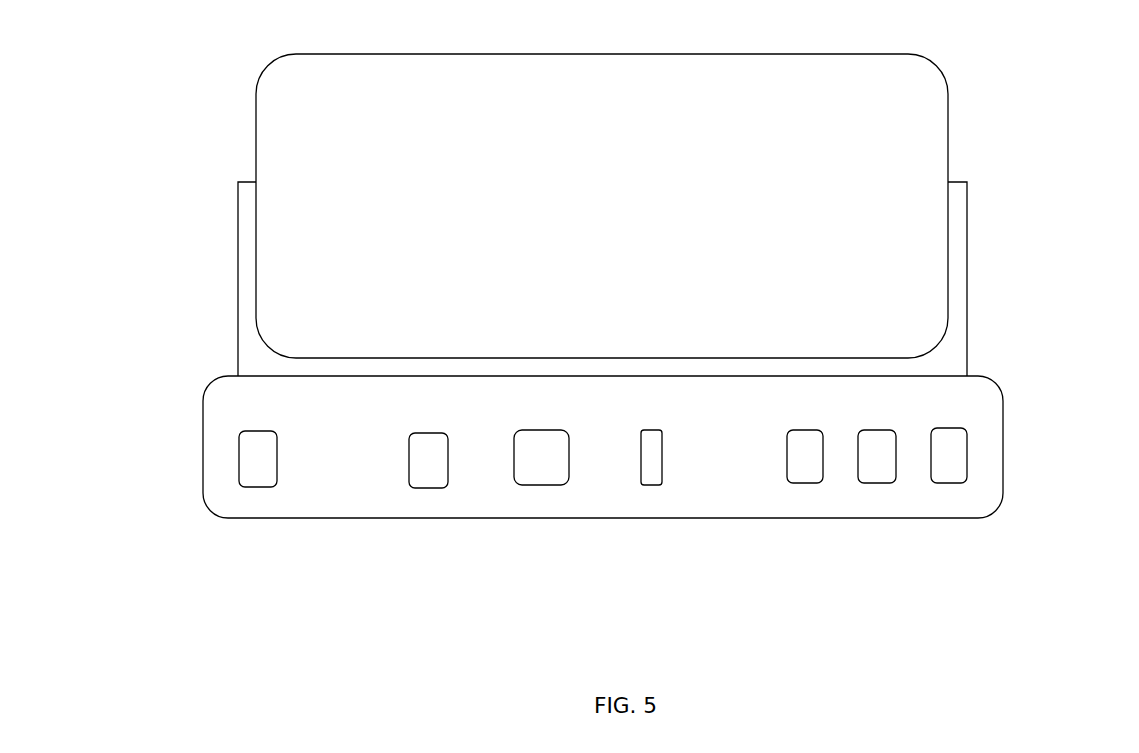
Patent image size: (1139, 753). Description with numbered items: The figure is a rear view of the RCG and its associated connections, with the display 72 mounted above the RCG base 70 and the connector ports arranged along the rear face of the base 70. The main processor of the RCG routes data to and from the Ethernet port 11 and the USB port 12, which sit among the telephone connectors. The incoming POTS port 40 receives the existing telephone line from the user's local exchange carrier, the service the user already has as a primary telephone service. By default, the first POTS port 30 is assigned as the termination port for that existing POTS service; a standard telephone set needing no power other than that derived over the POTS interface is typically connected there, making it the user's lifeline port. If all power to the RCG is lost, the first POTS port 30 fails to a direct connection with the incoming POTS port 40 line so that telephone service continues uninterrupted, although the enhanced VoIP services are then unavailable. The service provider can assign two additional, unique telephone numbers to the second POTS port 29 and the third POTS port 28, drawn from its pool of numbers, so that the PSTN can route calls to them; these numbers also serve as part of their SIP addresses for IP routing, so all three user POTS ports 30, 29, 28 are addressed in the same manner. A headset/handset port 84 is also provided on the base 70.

The display 72 is at (219, 36).
The RCG base 70 is at (166, 378).
The Incoming POTS Port 40 is at (173, 565).
The headset/handset port 84 is at (312, 660).
The Ethernet Port 11 is at (486, 620).
The USB Port 12 is at (632, 578).
The POTS 3 Port 28 is at (812, 565).
The POTS 2 Port 29 is at (947, 597).
The POTS 1 Port 30 is at (1035, 430).